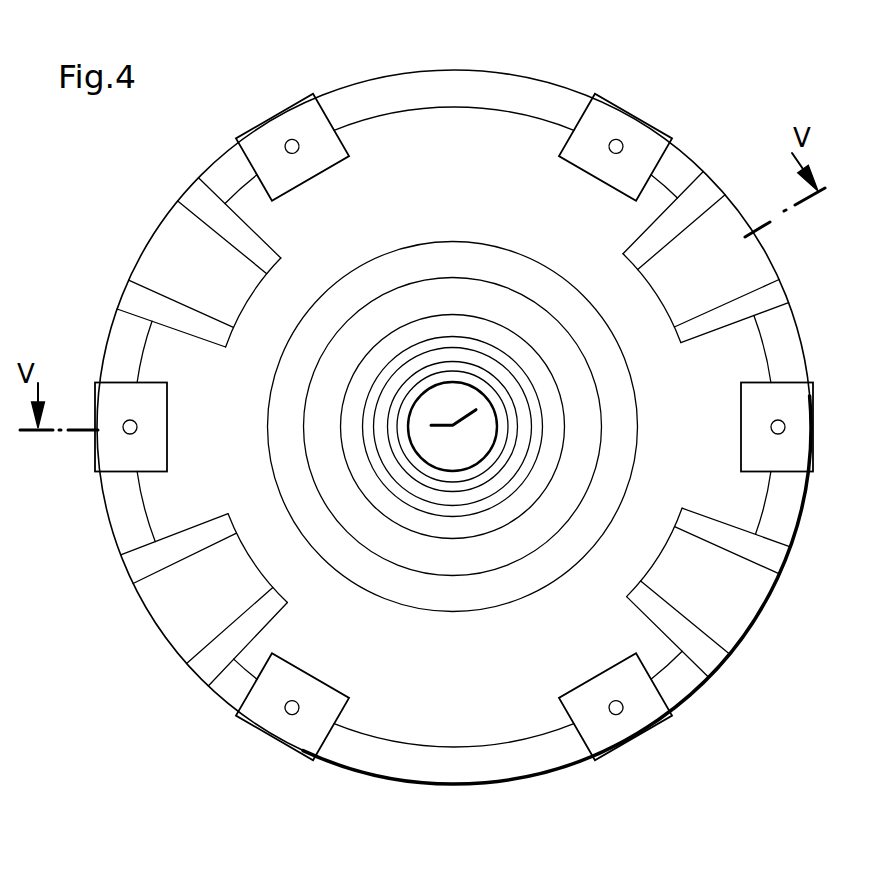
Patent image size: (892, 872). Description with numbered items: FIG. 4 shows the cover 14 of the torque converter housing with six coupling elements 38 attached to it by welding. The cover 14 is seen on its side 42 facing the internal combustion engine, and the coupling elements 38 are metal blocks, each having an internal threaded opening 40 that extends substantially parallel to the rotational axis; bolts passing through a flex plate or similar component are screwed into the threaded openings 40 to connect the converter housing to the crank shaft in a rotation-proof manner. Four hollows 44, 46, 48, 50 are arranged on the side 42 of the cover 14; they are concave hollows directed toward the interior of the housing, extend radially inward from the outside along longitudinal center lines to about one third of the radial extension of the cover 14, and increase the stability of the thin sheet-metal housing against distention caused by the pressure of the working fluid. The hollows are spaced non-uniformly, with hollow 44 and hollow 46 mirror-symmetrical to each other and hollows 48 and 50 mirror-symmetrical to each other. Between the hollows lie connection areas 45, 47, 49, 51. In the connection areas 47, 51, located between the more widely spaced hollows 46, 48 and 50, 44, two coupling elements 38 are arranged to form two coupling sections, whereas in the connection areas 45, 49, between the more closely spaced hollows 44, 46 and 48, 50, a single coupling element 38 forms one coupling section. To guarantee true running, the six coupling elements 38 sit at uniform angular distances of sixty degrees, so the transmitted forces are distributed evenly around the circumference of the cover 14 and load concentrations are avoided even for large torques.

The cover 14 is at (541, 82).
The coupling element 38 is at (802, 393).
The threaded opening 40 is at (785, 427).
The side 42 is at (572, 752).
The hollow 44 is at (158, 625).
The connection area 45 is at (148, 338).
The hollow 46 is at (172, 225).
The connection area 47 is at (470, 128).
The hollow 48 is at (760, 258).
The connection area 49 is at (745, 338).
The hollow 50 is at (755, 593).
The connection area 51 is at (500, 732).